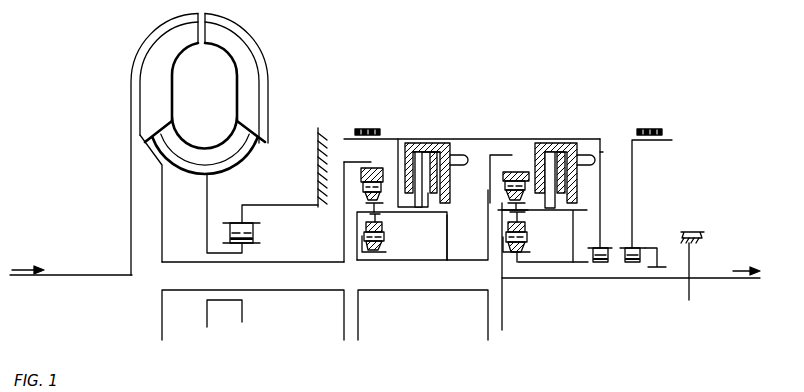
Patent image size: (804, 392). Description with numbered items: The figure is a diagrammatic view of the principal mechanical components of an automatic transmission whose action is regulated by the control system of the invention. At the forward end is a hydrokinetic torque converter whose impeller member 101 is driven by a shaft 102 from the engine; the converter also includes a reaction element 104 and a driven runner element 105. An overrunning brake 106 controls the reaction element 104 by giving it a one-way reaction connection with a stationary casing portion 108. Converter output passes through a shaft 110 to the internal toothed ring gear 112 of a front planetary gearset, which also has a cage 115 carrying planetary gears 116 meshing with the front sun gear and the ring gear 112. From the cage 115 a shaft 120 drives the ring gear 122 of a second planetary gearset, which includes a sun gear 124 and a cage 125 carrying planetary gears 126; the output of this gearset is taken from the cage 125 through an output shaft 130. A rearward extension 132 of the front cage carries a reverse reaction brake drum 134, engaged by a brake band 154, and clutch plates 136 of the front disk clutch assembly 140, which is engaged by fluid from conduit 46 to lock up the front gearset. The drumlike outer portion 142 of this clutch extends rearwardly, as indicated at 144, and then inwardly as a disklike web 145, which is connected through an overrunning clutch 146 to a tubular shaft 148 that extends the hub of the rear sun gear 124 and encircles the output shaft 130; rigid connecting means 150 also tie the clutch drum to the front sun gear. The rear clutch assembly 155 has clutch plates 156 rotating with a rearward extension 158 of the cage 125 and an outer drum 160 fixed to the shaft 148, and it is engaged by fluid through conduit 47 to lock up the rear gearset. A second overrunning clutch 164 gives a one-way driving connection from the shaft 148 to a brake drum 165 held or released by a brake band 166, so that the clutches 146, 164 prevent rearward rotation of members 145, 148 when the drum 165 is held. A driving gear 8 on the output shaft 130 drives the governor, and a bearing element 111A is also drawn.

The impeller member 101 is at (253, 43).
The shaft 102 is at (93, 277).
The reaction element 104 is at (236, 167).
The driven runner element 105 is at (158, 100).
The overrunning brake 106 is at (253, 237).
The casing portion 108 is at (318, 135).
The shaft 110 is at (307, 262).
The ring gear 112 is at (380, 167).
The cage 115 is at (352, 255).
The planetary gears 116 is at (362, 189).
The shaft 120 is at (427, 263).
The ring gear 122 is at (512, 163).
The sun gear 124 is at (528, 246).
The cage 125 is at (510, 240).
The planetary gears 126 is at (490, 197).
The output shaft 130 is at (647, 279).
The rearward extension 132 is at (402, 213).
The reverse reaction brake drum 134 is at (406, 142).
The clutch plates 136 is at (430, 203).
The disk clutch assembly 140 is at (437, 146).
The drumlike outer portion 142 is at (420, 143).
The rearward extension of clutch drum 144 is at (600, 140).
The disklike web portion 145 is at (603, 155).
The overrunning clutch 146 is at (606, 245).
The tubular shaft 148 is at (583, 262).
The rigid connecting means 150 is at (450, 248).
The brake band 154 is at (367, 128).
The rear clutch assembly 155 is at (540, 134).
The clutch plates 156 is at (577, 205).
The rearward extension 158 is at (540, 212).
The outer drum 160 is at (557, 143).
The overrunning clutch 164 is at (635, 248).
The brake drum 165 is at (672, 140).
The brake band 166 is at (660, 132).
The conduit 46 is at (456, 160).
The conduit 47 is at (583, 160).
The driving gear 8 is at (705, 238).
The bearing 111A is at (380, 249).